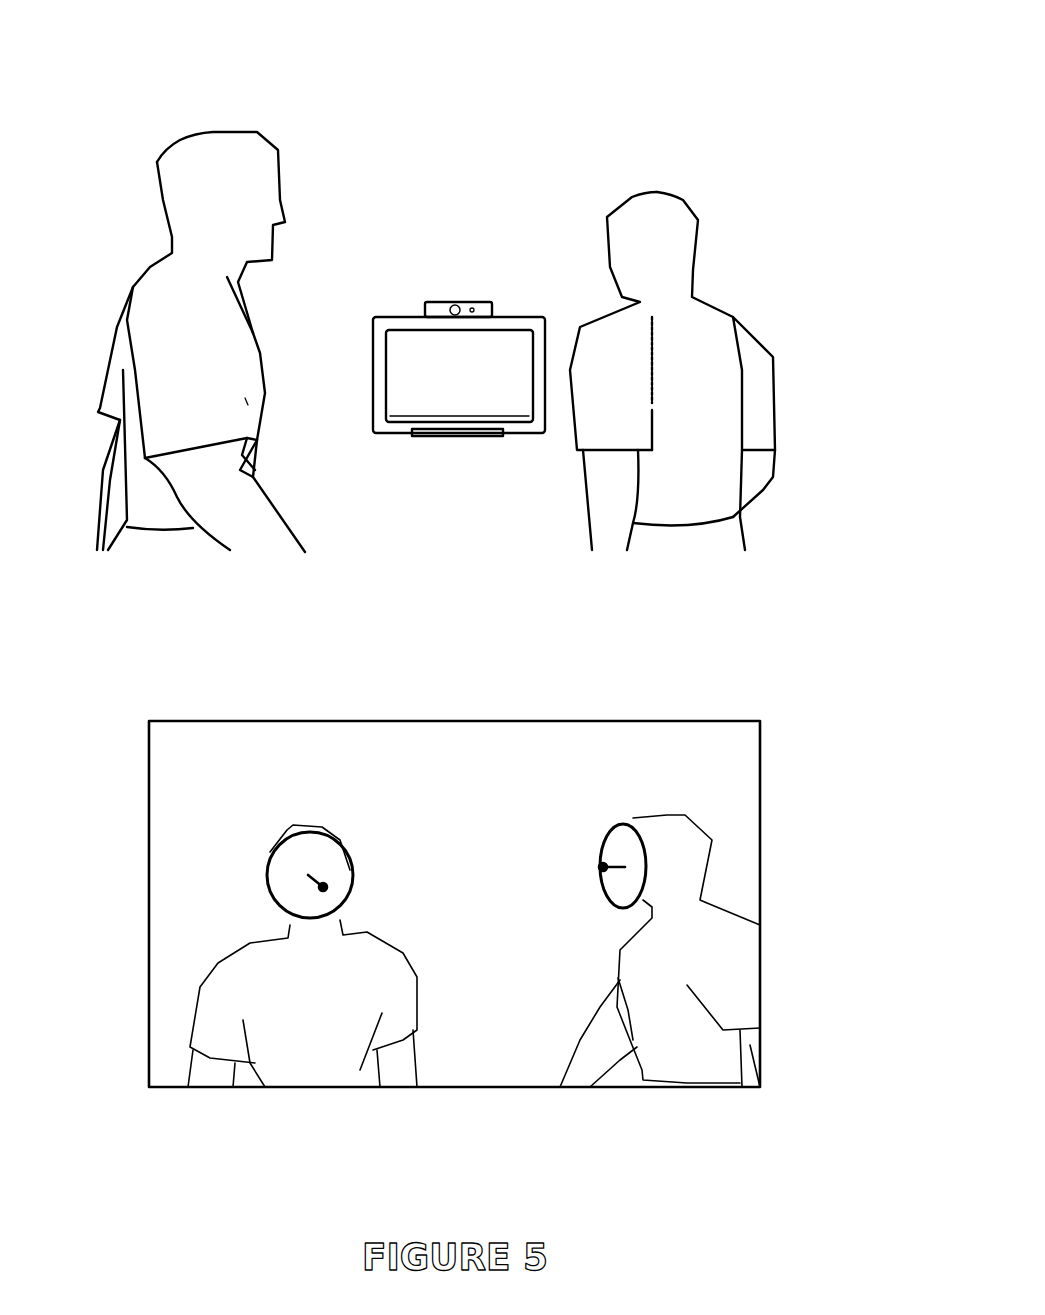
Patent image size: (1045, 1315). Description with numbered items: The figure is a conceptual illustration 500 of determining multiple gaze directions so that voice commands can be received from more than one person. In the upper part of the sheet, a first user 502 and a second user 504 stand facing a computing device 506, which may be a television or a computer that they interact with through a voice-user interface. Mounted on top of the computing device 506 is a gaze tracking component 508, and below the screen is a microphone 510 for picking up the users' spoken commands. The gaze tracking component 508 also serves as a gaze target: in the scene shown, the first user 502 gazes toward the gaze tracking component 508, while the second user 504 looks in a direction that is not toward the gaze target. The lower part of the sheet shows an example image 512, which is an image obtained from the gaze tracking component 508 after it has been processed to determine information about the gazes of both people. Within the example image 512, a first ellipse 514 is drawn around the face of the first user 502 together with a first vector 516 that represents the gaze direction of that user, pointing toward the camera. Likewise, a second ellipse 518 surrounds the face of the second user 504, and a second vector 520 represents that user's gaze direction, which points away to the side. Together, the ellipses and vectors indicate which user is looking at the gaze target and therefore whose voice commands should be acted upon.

The conceptual illustration 500 is at (95, 70).
The first user 502 is at (659, 182).
The second user 504 is at (237, 124).
The computing device 506 is at (372, 365).
The gaze tracking component 508 is at (455, 303).
The microphone 510 is at (468, 436).
The example image 512 is at (149, 940).
The first ellipse 514 is at (267, 878).
The first vector 516 is at (335, 868).
The second ellipse 518 is at (610, 898).
The second vector 520 is at (606, 853).